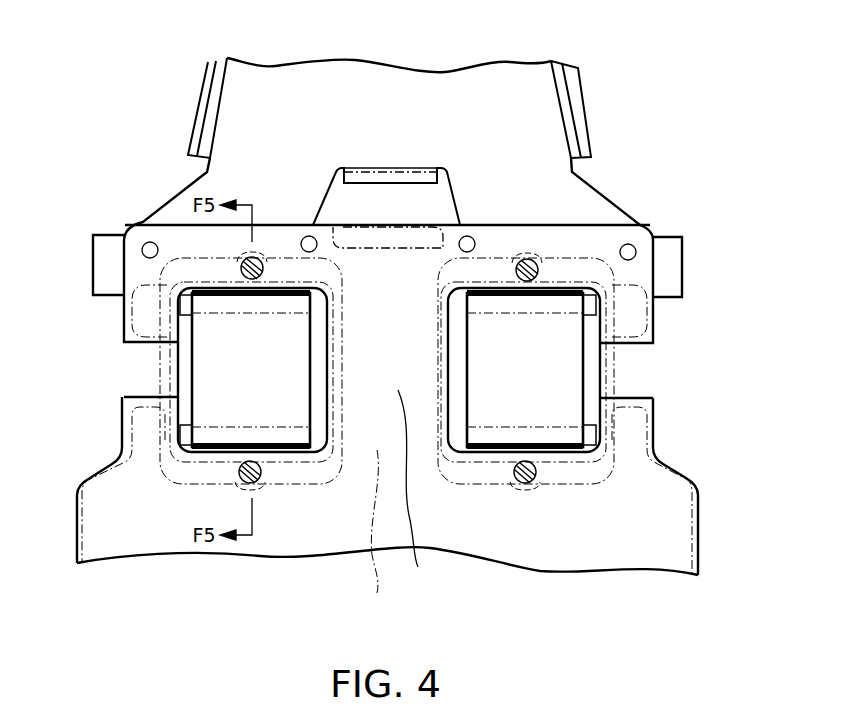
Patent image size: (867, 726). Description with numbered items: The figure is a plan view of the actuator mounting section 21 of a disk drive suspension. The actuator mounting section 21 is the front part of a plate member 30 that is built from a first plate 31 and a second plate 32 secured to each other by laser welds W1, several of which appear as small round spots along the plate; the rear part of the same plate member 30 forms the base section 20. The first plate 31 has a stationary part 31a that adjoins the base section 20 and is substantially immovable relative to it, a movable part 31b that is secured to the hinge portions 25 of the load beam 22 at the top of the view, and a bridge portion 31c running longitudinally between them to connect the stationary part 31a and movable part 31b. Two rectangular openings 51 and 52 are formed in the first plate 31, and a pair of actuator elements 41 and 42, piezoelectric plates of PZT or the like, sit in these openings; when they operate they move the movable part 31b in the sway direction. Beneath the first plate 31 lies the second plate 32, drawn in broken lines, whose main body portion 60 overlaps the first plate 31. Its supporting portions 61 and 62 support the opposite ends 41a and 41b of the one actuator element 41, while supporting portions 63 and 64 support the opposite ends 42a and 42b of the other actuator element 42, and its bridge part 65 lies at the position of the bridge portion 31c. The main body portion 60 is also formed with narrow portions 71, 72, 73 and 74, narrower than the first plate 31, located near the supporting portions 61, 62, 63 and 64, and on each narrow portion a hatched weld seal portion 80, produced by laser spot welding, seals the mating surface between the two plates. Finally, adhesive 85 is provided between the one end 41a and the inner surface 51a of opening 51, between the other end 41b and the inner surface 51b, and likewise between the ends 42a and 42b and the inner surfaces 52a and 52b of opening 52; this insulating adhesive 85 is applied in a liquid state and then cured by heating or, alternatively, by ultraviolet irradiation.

The base section 20 is at (700, 512).
The actuator mounting section 21 is at (724, 171).
The load beam 22 is at (443, 80).
The hinge portions 25 is at (198, 176).
The plate member 30 is at (477, 557).
The first plate 31 is at (325, 567).
The stationary part 31a is at (273, 545).
The movable part 31b is at (387, 240).
The bridge portion 31c is at (418, 492).
The second plate 32 is at (702, 545).
The actuator element 41 is at (182, 377).
The one end of actuator element 41a is at (233, 291).
The other end of actuator element 41b is at (240, 452).
The actuator element 42 is at (586, 380).
The one end of actuator element 42a is at (555, 286).
The other end of actuator element 42b is at (555, 456).
The opening 51 is at (179, 352).
The inner surface of opening 51a is at (288, 298).
The inner surface of opening 51b is at (277, 443).
The opening 52 is at (590, 345).
The inner surface of opening 52a is at (500, 297).
The inner surface of opening 52b is at (502, 445).
The main body portion 60 is at (628, 553).
The supporting portion 61 is at (185, 307).
The supporting portion 62 is at (185, 433).
The supporting portion 63 is at (590, 304).
The supporting portion 64 is at (590, 437).
The bridge part 65 is at (375, 533).
The narrow portion 71 is at (237, 262).
The narrow portion 72 is at (230, 482).
The narrow portion 73 is at (563, 263).
The narrow portion 74 is at (560, 485).
The weld seal portion 80 is at (256, 257).
The adhesive 85 is at (245, 297).
The laser welds W1 is at (152, 242).